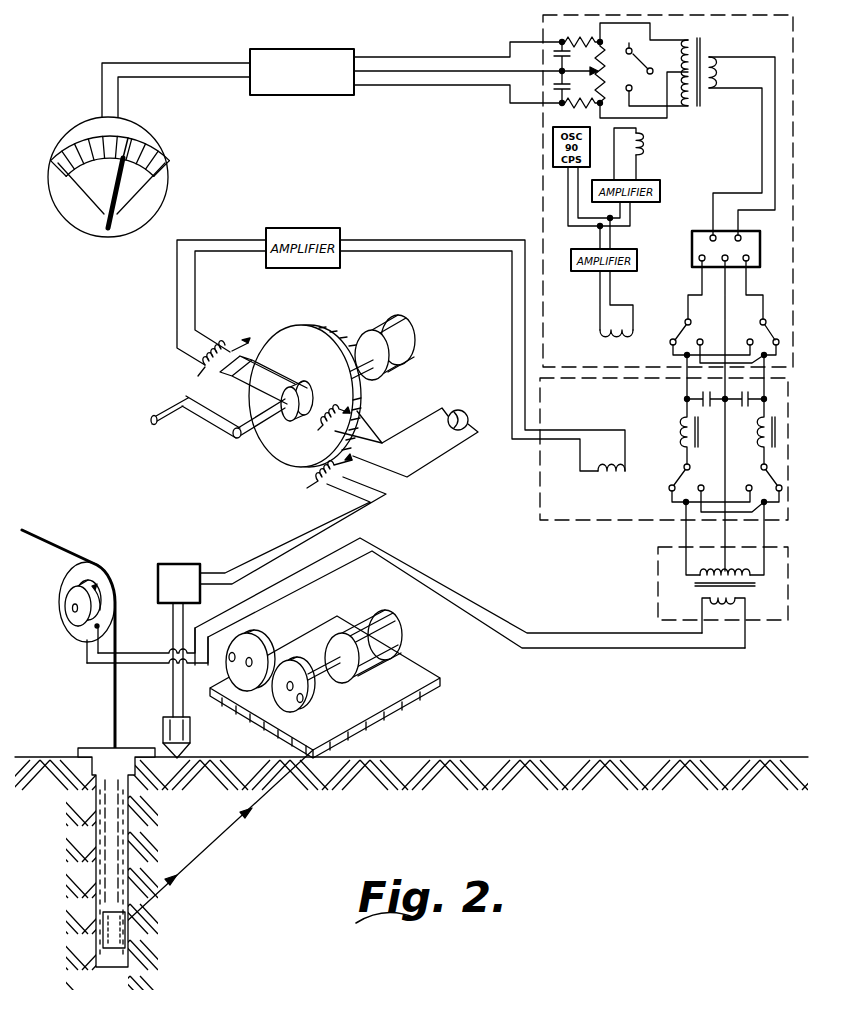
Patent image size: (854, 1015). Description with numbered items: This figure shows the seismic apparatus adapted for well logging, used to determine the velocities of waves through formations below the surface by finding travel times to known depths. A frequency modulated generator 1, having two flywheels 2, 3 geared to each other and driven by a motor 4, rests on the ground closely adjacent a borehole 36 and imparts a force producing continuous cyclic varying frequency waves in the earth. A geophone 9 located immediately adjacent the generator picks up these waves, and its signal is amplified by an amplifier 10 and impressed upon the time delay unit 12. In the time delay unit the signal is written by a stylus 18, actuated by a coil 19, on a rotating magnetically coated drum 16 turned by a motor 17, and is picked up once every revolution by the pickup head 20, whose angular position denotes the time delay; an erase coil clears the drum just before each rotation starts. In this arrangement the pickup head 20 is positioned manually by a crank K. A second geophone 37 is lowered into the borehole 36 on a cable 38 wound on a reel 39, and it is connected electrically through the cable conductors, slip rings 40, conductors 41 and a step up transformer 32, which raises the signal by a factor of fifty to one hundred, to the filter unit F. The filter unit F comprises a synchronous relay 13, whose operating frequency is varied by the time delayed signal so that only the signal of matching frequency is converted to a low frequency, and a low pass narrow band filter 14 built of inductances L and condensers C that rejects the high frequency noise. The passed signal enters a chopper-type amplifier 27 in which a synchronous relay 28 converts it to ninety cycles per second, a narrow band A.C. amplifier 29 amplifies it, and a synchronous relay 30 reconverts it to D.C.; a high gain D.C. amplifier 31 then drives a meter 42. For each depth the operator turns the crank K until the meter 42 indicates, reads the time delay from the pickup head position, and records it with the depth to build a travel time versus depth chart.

The frequency modulated generator 1 is at (470, 695).
The flywheel 2 is at (246, 636).
The flywheel 3 is at (307, 644).
The motor 4 is at (386, 625).
The geophone 9 is at (191, 729).
The amplifier 10 is at (178, 564).
The time delay unit 12 is at (434, 394).
The synchronous relay 13 is at (678, 478).
The low pass narrow band filter 14 is at (687, 409).
The magnetically coated drum 16 is at (300, 333).
The disc drive motor 17 is at (400, 331).
The stylus 18 is at (348, 460).
The coil 19 is at (318, 483).
The pickup head 20 is at (224, 352).
The chopper-type amplifier 27 is at (543, 143).
The synchronous relay 28 is at (684, 323).
The narrow band A.C. amplifier 29 is at (692, 253).
The synchronous relay 30 is at (644, 52).
The high gain D.C. amplifier 31 is at (310, 97).
The step up transformer 32 is at (658, 580).
The borehole 36 is at (135, 842).
The geophone 37 is at (103, 935).
The cable 38 is at (112, 836).
The reel 39 is at (77, 566).
The slip rings 40 is at (68, 592).
The conductors 41 is at (578, 648).
The meter 42 is at (172, 181).
The crank K is at (200, 420).
The filter unit F is at (540, 503).
The condensers C is at (712, 403).
The inductances L is at (700, 435).